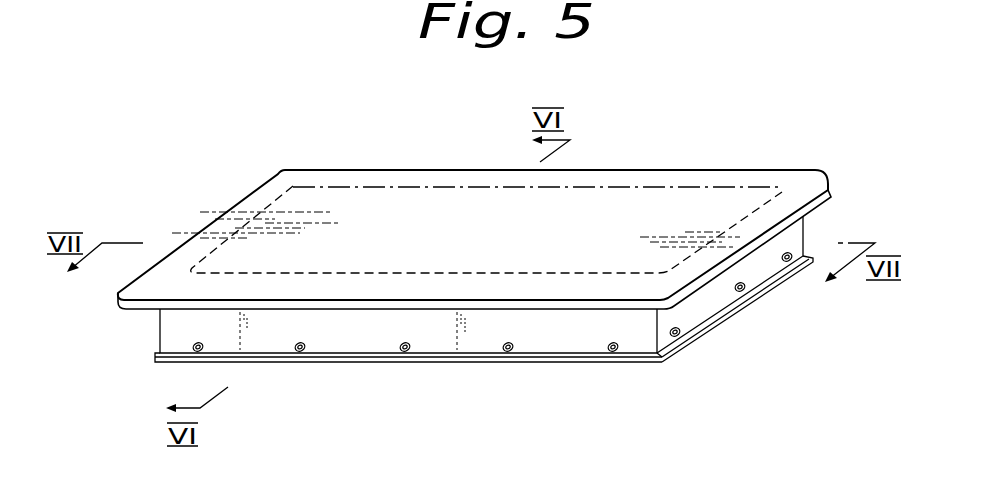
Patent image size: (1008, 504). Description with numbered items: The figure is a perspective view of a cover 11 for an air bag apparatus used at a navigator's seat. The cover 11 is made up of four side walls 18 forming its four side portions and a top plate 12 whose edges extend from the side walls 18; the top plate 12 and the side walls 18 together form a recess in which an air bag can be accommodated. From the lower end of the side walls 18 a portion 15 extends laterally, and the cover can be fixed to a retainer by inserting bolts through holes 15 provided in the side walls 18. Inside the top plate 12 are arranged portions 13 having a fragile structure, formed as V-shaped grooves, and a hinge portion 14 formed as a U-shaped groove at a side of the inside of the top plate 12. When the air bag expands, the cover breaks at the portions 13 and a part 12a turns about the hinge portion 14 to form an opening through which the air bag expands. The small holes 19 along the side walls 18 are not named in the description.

The cover 11 is at (497, 255).
The top plate 12 is at (262, 178).
The part of the top plate 12a is at (385, 215).
The portion to be broken 13 is at (215, 240).
The hinge portion 14 is at (620, 187).
The laterally extending portion 15 is at (516, 305).
The side wall 18 is at (565, 356).
The mounting holes 19 is at (503, 350).